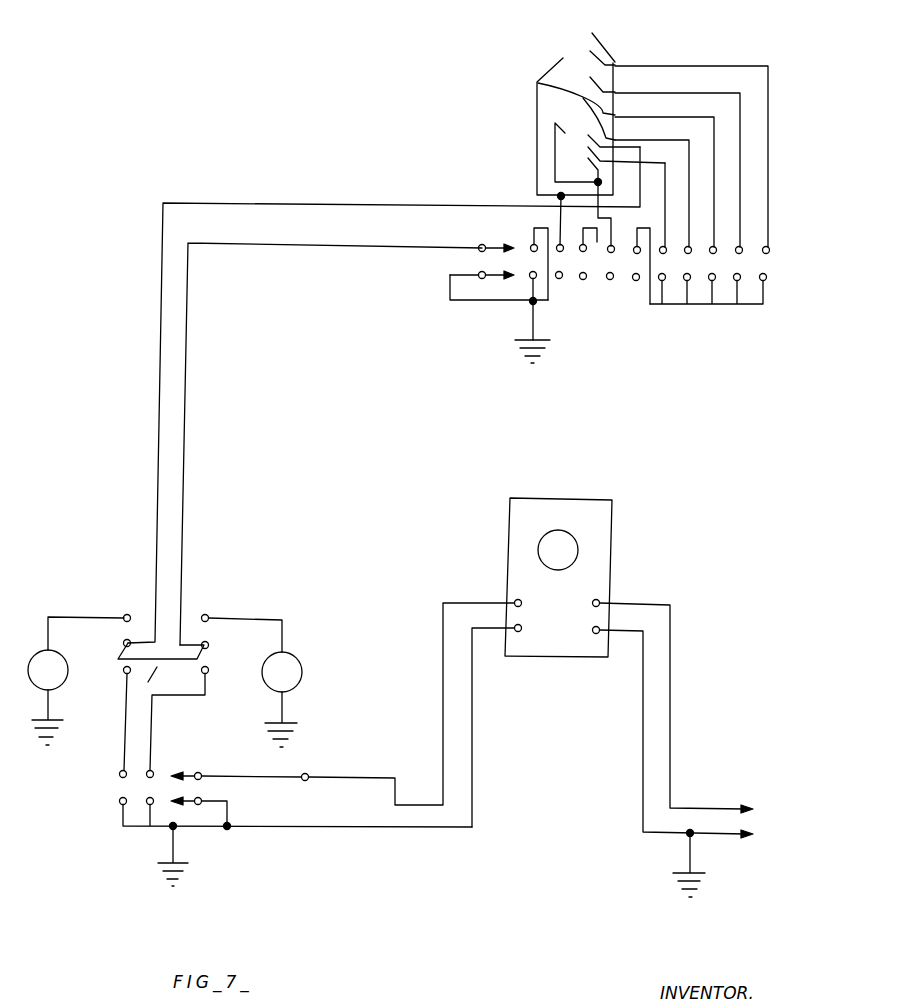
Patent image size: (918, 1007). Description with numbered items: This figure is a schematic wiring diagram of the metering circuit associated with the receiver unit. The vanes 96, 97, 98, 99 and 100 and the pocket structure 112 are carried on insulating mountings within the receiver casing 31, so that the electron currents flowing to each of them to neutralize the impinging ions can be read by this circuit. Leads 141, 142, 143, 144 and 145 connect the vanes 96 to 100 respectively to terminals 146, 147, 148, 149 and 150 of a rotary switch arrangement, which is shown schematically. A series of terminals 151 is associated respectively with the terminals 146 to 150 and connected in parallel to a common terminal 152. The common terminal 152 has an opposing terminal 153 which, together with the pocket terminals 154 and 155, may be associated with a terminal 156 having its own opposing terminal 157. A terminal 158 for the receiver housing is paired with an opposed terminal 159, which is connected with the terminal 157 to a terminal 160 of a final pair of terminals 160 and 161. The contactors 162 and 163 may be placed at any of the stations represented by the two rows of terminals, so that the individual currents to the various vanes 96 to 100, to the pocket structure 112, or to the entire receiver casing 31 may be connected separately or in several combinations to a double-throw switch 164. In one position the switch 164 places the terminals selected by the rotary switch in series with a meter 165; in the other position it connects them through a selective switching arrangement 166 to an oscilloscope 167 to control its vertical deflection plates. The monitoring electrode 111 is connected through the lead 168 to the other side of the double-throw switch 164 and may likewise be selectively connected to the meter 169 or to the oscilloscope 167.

The receiver casing 31 is at (537, 118).
The vane 96 is at (590, 51).
The vane 97 is at (590, 77).
The vane 98 is at (583, 90).
The vane 99 is at (583, 98).
The vane 100 is at (588, 152).
The monitoring electrode 111 is at (603, 139).
The pocket structure 112 is at (555, 145).
The lead 141 is at (678, 65).
The lead 142 is at (713, 92).
The lead 143 is at (702, 117).
The lead 144 is at (690, 157).
The lead 145 is at (666, 216).
The terminal 146 is at (769, 248).
The terminal 147 is at (741, 246).
The terminal 148 is at (715, 246).
The terminal 149 is at (690, 246).
The terminal 150 is at (666, 253).
The terminals 151 is at (766, 281).
The common terminal 152 is at (637, 281).
The opposing terminal 153 is at (636, 282).
The pocket terminal 154 is at (613, 252).
The pocket terminal 155 is at (611, 281).
The terminal 156 is at (581, 244).
The opposing terminal 157 is at (584, 281).
The terminal 158 is at (578, 258).
The opposed terminal 159 is at (561, 280).
The terminal 160 is at (530, 244).
The terminal 161 is at (528, 278).
The contactor 162 is at (478, 250).
The contactor 163 is at (478, 277).
The double-throw switch 164 is at (182, 648).
The meter 165 is at (295, 665).
The selective switching arrangement 166 is at (199, 772).
The oscilloscope 167 is at (607, 547).
The lead 168 is at (280, 202).
The meter 169 is at (44, 648).